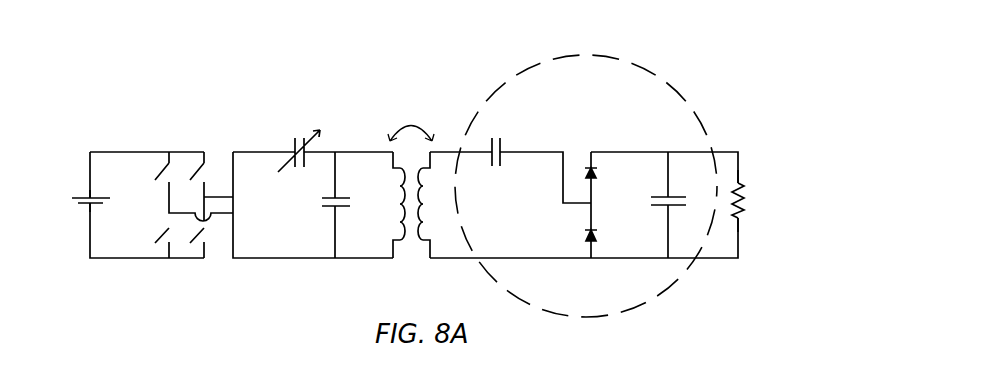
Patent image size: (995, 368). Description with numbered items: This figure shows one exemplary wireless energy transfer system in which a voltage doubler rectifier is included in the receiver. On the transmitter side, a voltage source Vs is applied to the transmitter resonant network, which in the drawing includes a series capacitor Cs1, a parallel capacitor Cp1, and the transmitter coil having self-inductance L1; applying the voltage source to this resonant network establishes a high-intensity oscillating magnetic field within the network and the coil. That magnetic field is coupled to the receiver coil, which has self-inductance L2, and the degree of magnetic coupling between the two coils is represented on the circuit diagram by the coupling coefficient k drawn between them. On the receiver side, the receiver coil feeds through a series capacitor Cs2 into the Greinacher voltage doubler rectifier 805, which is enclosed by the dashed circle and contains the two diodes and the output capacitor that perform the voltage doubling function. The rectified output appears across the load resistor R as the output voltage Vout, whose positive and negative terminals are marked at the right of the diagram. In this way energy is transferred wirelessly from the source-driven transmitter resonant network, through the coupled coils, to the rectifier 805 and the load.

The Greinacher voltage doubler rectifier 805 is at (593, 55).
The source voltage Vs is at (74, 199).
The primary series variable capacitor Cs1 is at (299, 140).
The primary parallel capacitor Cp1 is at (311, 205).
The self-inductance of the transmitter coil L1 is at (387, 205).
The self-inductance of the receiver coil L2 is at (437, 205).
The coupling coefficient k is at (411, 139).
The secondary series capacitor Cs2 is at (492, 137).
The load resistor R is at (728, 200).
The output voltage Vout is at (771, 203).